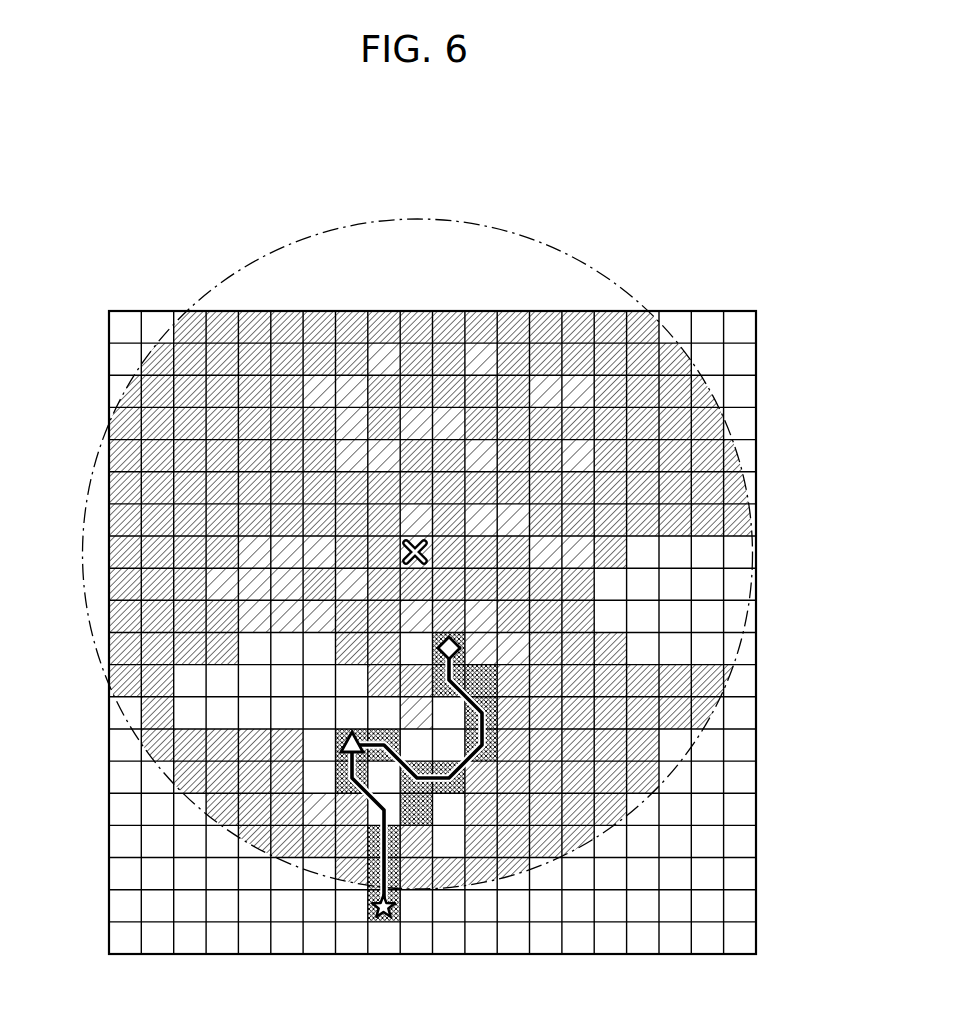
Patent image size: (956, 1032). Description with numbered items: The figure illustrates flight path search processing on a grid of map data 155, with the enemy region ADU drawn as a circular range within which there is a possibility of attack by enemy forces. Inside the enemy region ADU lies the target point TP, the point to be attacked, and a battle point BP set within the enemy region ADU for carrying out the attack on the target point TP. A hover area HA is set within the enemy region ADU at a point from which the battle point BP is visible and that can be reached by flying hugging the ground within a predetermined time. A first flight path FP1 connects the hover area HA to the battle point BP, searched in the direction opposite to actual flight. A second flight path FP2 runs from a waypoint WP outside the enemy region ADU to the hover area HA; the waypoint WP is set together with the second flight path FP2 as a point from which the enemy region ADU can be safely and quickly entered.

The enemy region ADU is at (610, 282).
The map data 155 is at (756, 362).
The target point TP is at (427, 552).
The battle point BP is at (465, 649).
The hover area HA is at (343, 742).
The first flight path FP1 is at (497, 740).
The second flight path FP2 is at (400, 885).
The waypoint WP is at (383, 922).